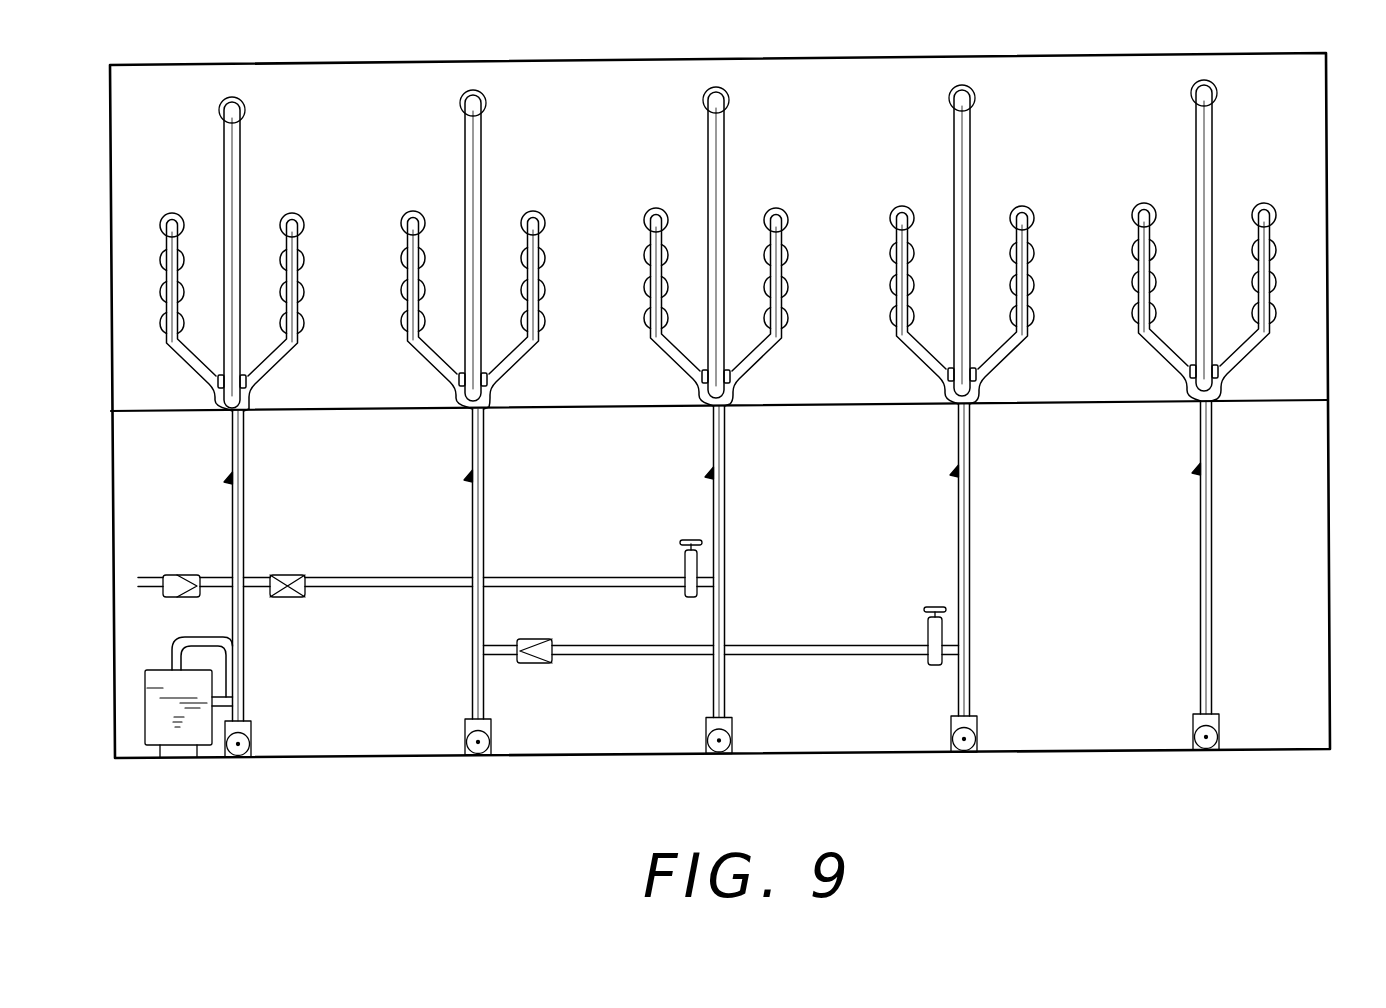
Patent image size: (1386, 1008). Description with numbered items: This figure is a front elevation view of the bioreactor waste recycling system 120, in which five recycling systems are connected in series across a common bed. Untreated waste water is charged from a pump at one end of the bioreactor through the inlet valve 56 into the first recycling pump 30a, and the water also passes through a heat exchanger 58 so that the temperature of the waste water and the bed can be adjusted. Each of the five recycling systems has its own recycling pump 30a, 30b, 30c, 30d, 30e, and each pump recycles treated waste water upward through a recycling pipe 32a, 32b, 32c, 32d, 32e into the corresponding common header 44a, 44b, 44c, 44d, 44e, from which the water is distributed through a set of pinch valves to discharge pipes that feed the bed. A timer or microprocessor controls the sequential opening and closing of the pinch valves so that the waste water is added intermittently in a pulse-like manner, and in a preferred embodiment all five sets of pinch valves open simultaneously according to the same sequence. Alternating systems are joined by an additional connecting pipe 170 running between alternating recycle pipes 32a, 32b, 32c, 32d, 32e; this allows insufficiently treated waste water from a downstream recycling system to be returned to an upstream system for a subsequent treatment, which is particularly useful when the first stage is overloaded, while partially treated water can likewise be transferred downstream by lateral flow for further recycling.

The fluid distribution system 120 is at (1338, 484).
The recycling pipe 32a is at (276, 252).
The recycling pipe 32b is at (526, 245).
The recycling pipe 32c is at (766, 242).
The recycling pipe 32d is at (1010, 240).
The recycling pipe 32e is at (1247, 235).
The common header 44a is at (266, 312).
The common header 44b is at (506, 310).
The common header 44c is at (744, 307).
The common header 44d is at (995, 305).
The common header 44e is at (1219, 302).
The recycling pump 30a is at (252, 735).
The recycling pump 30b is at (492, 733).
The recycling pump 30c is at (733, 732).
The recycling pump 30d is at (978, 731).
The recycling pump 30e is at (1220, 728).
The inlet valve 56 is at (175, 575).
The connecting pipe 170 is at (578, 576).
The heat exchanger 58 is at (160, 727).